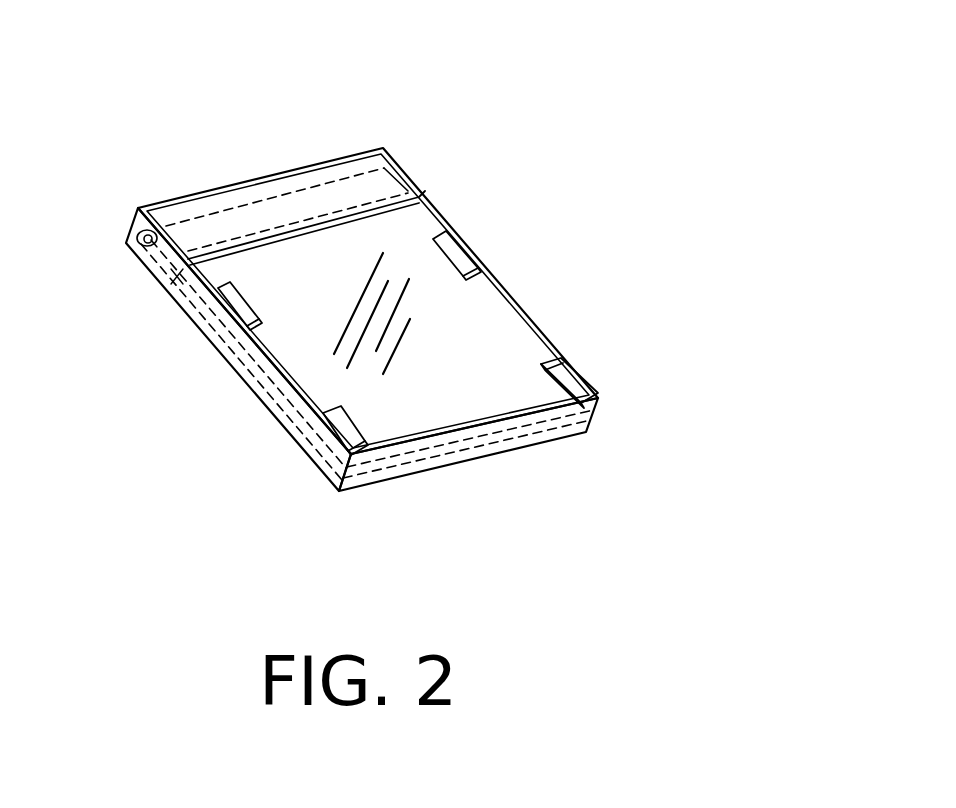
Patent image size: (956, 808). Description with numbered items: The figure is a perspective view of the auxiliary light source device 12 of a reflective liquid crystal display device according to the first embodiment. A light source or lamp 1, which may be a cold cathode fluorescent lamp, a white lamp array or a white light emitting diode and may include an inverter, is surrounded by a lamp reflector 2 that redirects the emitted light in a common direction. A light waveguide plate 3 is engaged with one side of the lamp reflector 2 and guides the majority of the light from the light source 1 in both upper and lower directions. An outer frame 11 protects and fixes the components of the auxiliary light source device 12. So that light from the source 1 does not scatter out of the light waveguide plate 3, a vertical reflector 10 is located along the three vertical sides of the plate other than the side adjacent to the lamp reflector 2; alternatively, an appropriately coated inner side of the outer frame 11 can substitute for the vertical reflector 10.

The light source 1 is at (143, 240).
The lamp reflector 2 is at (260, 210).
The light waveguide plate 3 is at (473, 327).
The vertical reflector 10 is at (253, 375).
The outer frame 11 is at (260, 405).
The auxiliary light source device 12 is at (522, 132).